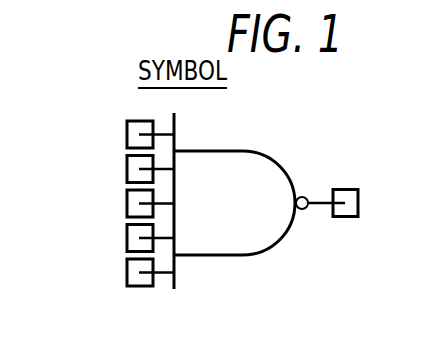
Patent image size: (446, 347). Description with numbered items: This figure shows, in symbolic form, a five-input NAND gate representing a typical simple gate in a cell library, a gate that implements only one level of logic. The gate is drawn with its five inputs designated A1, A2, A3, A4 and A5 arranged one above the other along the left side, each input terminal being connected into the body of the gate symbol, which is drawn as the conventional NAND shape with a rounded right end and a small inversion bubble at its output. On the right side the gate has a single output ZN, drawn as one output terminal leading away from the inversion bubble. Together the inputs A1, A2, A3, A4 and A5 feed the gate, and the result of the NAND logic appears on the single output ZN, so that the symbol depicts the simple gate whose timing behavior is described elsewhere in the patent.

The input A1 is at (130, 135).
The input A2 is at (130, 169).
The input A3 is at (130, 204).
The input A4 is at (130, 238).
The input A5 is at (130, 273).
The output ZN is at (339, 219).